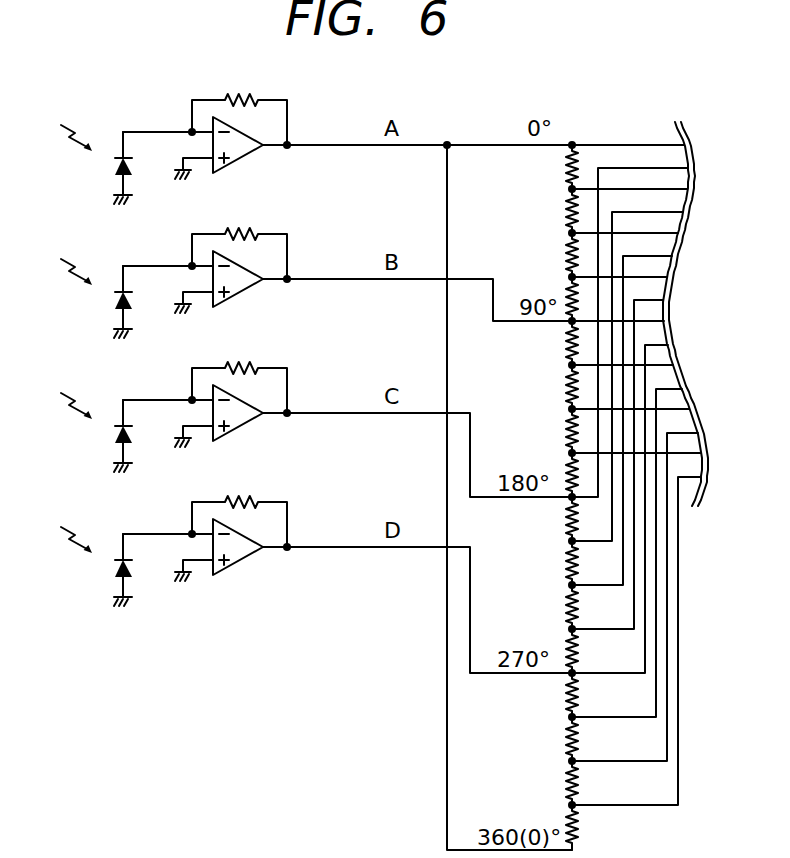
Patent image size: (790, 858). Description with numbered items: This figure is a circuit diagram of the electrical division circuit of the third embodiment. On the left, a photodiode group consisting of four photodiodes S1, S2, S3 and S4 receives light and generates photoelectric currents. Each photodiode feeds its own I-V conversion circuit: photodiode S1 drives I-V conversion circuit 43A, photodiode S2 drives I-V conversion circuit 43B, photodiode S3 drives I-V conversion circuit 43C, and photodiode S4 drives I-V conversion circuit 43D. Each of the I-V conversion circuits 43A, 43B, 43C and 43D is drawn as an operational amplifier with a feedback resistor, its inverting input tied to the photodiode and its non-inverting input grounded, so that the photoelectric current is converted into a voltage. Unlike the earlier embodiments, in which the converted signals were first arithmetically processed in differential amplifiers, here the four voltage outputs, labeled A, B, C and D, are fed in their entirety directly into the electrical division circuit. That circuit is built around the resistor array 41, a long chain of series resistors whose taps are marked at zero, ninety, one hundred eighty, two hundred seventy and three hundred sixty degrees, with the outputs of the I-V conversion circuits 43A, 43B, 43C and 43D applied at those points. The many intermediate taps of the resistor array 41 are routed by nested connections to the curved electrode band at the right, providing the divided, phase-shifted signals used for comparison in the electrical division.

The resistor array 41 is at (582, 131).
The I-V conversion circuit 43A is at (233, 142).
The I-V conversion circuit 43B is at (233, 276).
The I-V conversion circuit 43C is at (233, 410).
The I-V conversion circuit 43D is at (233, 544).
The photodiode S1 is at (135, 164).
The photodiode S2 is at (135, 298).
The photodiode S3 is at (135, 432).
The photodiode S4 is at (135, 566).